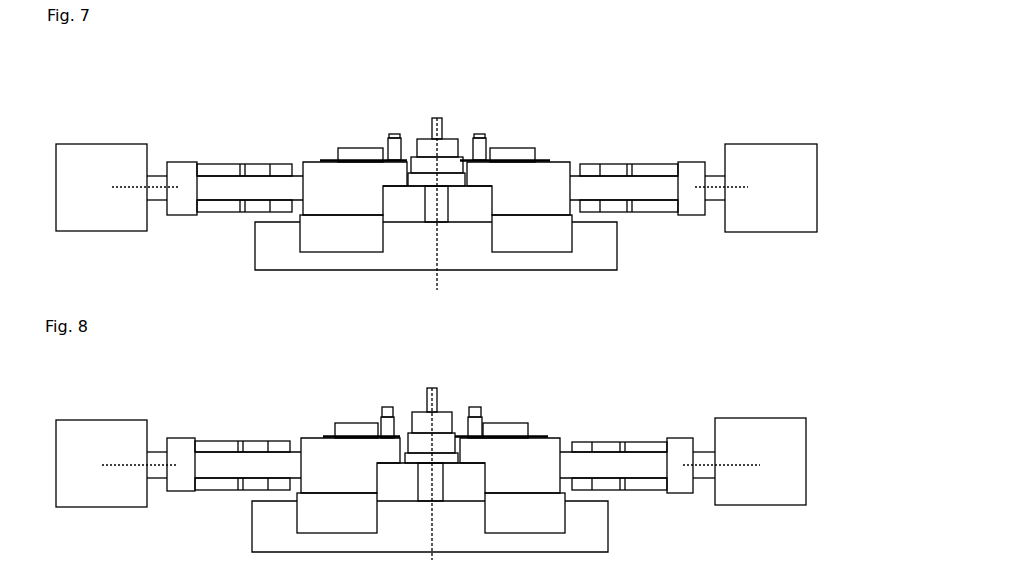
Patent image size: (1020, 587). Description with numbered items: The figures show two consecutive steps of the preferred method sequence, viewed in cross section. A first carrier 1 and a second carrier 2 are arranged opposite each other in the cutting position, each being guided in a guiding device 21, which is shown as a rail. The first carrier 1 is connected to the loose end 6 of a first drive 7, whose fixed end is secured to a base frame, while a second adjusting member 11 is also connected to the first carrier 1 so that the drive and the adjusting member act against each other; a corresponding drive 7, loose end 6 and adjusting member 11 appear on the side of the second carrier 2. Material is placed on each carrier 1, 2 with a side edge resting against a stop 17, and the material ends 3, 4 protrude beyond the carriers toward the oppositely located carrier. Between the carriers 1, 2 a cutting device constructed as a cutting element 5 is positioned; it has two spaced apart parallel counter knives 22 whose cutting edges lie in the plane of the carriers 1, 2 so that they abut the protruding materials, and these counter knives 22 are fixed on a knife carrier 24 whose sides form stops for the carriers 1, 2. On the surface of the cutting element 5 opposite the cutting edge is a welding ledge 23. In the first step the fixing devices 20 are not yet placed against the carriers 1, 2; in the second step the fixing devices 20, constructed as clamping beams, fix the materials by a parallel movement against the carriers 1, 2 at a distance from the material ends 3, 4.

In FIG. 7, the first carrier 1 is at (316, 161).
In FIG. 8, the first carrier 1 is at (316, 437).
In FIG. 7, the second carrier 2 is at (573, 161).
In FIG. 8, the second carrier 2 is at (563, 436).
In FIG. 7, the material end 3 is at (416, 157).
In FIG. 8, the material end 3 is at (414, 432).
In FIG. 7, the material end 4 is at (463, 160).
In FIG. 8, the material end 4 is at (459, 432).
In FIG. 7, the cutting element 5 is at (423, 138).
In FIG. 8, the cutting element 5 is at (426, 412).
In FIG. 7, the loose end 6 is at (167, 168).
In FIG. 8, the loose end 6 is at (164, 446).
In FIG. 7, the first drive 7 is at (436, 188).
In FIG. 8, the first drive 7 is at (431, 462).
In FIG. 7, the second adjusting member 11 is at (239, 163).
In FIG. 8, the second adjusting member 11 is at (230, 440).
In FIG. 7, the stop 17 is at (352, 156).
In FIG. 8, the stop 17 is at (352, 426).
In FIG. 7, the fixing device 20 is at (394, 136).
In FIG. 8, the fixing device 20 is at (391, 410).
In FIG. 7, the guiding device 21 is at (584, 252).
In FIG. 8, the guiding device 21 is at (574, 525).
In FIG. 7, the counter knife 22 is at (414, 178).
In FIG. 8, the counter knife 22 is at (405, 452).
In FIG. 7, the welding ledge 23 is at (441, 116).
In FIG. 8, the welding ledge 23 is at (435, 386).
In FIG. 7, the knife carrier 24 is at (441, 188).
In FIG. 8, the knife carrier 24 is at (420, 464).